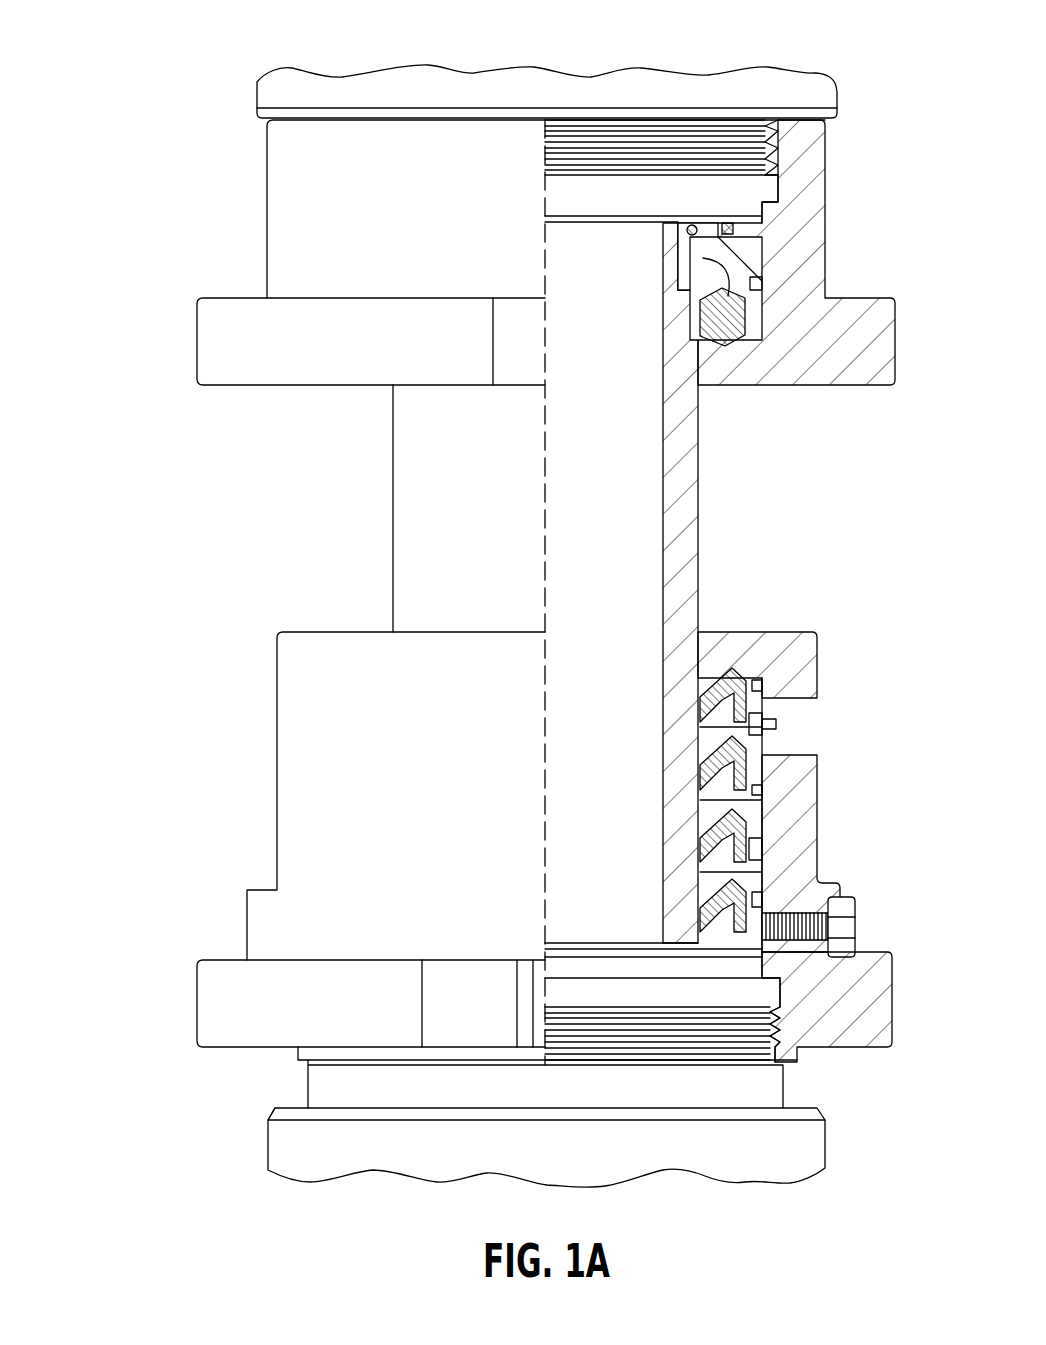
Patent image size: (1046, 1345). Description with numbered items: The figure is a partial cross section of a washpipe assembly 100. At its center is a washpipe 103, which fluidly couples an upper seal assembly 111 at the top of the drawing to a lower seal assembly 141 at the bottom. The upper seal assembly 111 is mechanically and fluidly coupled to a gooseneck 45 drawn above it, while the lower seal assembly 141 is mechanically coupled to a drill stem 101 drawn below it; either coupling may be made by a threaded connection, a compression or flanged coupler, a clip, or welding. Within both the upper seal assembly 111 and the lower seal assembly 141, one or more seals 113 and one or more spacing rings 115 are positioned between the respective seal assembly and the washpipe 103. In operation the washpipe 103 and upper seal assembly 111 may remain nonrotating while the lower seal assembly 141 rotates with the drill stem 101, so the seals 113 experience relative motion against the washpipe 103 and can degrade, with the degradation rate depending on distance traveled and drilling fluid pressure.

The washpipe assembly 100 is at (147, 70).
The gooseneck 45 is at (837, 93).
The upper seal assembly 111 is at (238, 210).
The spacing ring 115 is at (753, 243).
The seal 113 is at (737, 343).
The washpipe 103 is at (393, 467).
The lower seal assembly 141 is at (243, 772).
The drill stem 101 is at (826, 1145).